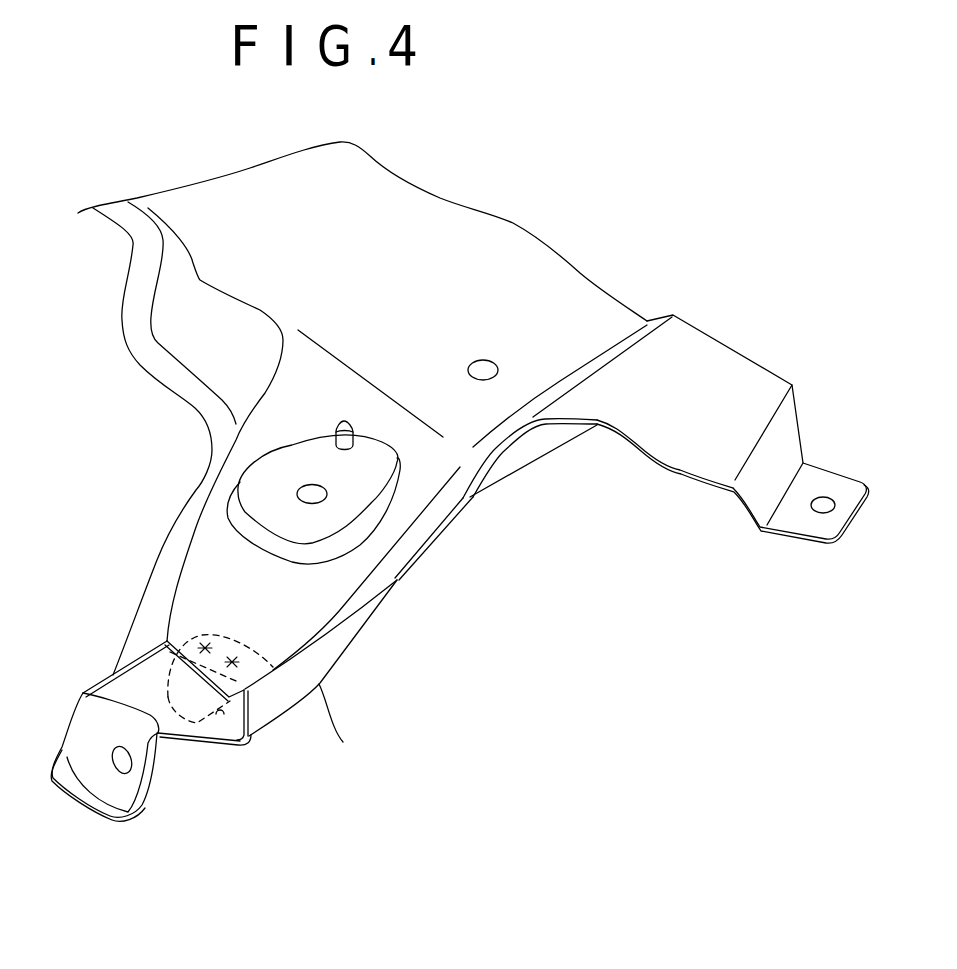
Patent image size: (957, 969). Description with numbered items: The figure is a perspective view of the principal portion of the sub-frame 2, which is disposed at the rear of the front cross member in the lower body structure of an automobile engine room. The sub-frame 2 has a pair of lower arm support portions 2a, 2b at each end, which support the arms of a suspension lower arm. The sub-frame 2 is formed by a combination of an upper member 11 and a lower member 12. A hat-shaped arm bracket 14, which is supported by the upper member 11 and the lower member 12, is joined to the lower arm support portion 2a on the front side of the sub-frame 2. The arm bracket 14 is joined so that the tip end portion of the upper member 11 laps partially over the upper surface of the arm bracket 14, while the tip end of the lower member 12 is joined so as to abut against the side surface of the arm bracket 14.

The sub-frame 2 is at (547, 262).
The lower arm support portion 2a is at (157, 595).
The lower arm support portion 2b is at (718, 358).
The upper member 11 is at (303, 595).
The lower member 12 is at (323, 671).
The arm bracket 14 is at (135, 778).